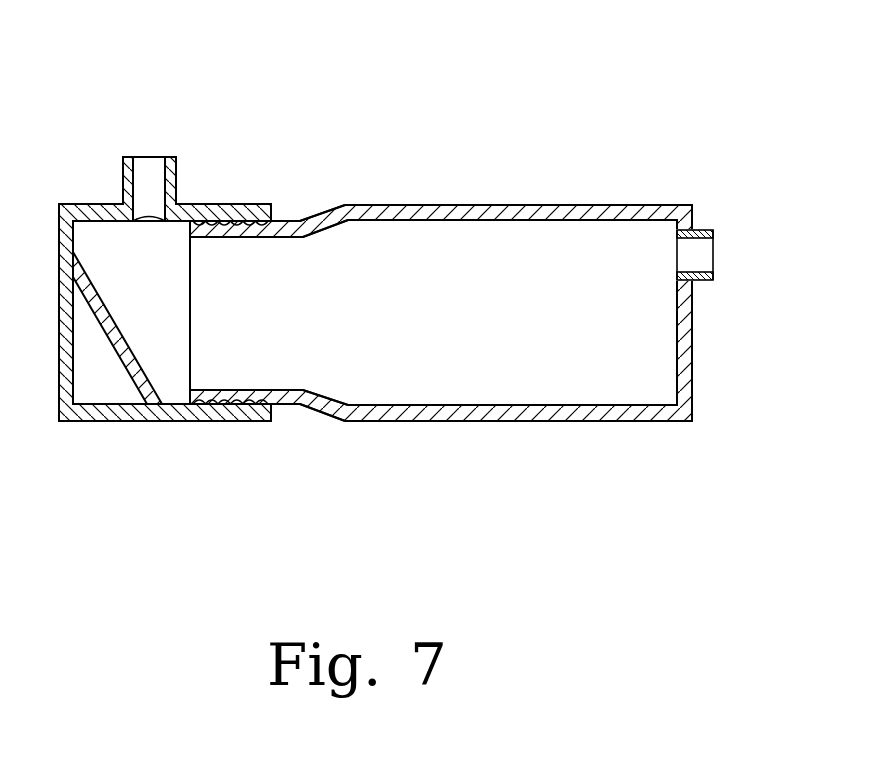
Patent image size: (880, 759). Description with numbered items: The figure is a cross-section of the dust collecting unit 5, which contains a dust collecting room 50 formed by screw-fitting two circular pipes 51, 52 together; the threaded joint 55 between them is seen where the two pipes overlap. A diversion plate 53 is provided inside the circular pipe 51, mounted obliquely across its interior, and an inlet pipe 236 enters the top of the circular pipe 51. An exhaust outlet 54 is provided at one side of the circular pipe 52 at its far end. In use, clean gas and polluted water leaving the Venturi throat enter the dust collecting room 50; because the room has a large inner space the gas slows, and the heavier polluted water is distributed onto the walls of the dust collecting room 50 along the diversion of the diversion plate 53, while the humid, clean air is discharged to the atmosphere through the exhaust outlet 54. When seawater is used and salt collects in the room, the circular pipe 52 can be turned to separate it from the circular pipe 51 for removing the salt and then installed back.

The dust collecting unit 5 is at (543, 193).
The dust collecting room 50 is at (452, 253).
The circular pipe 51 is at (233, 203).
The circular pipe 52 is at (612, 205).
The diversion plate 53 is at (112, 350).
The exhaust outlet 54 is at (705, 230).
The threads 55 is at (273, 218).
The inlet tube 236 is at (150, 155).